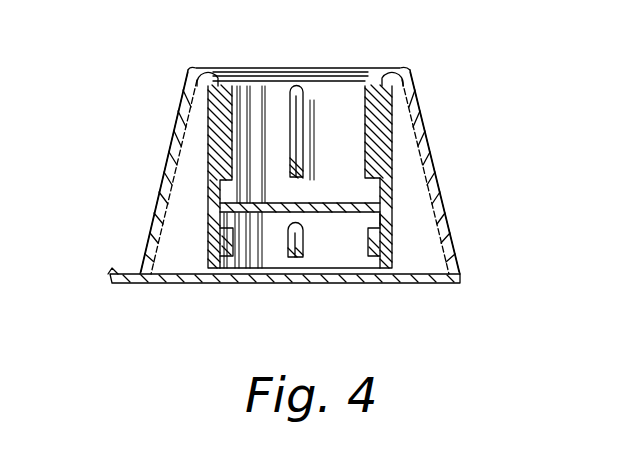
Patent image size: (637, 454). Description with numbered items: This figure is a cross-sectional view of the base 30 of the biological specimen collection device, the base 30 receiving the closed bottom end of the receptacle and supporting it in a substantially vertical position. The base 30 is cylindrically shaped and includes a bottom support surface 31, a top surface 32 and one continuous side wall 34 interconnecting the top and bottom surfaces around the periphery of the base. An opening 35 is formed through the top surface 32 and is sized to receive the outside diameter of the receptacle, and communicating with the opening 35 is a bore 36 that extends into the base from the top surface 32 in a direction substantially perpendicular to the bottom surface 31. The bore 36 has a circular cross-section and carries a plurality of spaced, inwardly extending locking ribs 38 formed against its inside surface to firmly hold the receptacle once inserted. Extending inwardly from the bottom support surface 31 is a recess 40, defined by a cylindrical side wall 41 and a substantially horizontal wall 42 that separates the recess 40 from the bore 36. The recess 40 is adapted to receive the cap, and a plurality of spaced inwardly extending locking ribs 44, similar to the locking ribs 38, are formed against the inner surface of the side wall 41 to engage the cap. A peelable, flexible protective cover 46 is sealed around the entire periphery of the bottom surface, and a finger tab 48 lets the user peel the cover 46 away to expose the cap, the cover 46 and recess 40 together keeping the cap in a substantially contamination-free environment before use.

The base 30 is at (431, 151).
The bottom support surface 31 is at (460, 283).
The top surface 32 is at (393, 75).
The side walls 34 is at (168, 171).
The opening 35 is at (228, 71).
The bore 36 is at (380, 192).
The locking ribs 38 is at (234, 100).
The recess 40 is at (231, 262).
The cylindrical side wall 41 is at (377, 222).
The horizontal wall 42 is at (278, 217).
The locking ribs 44 is at (232, 238).
The protective cover 46 is at (147, 282).
The finger tab 48 is at (108, 274).